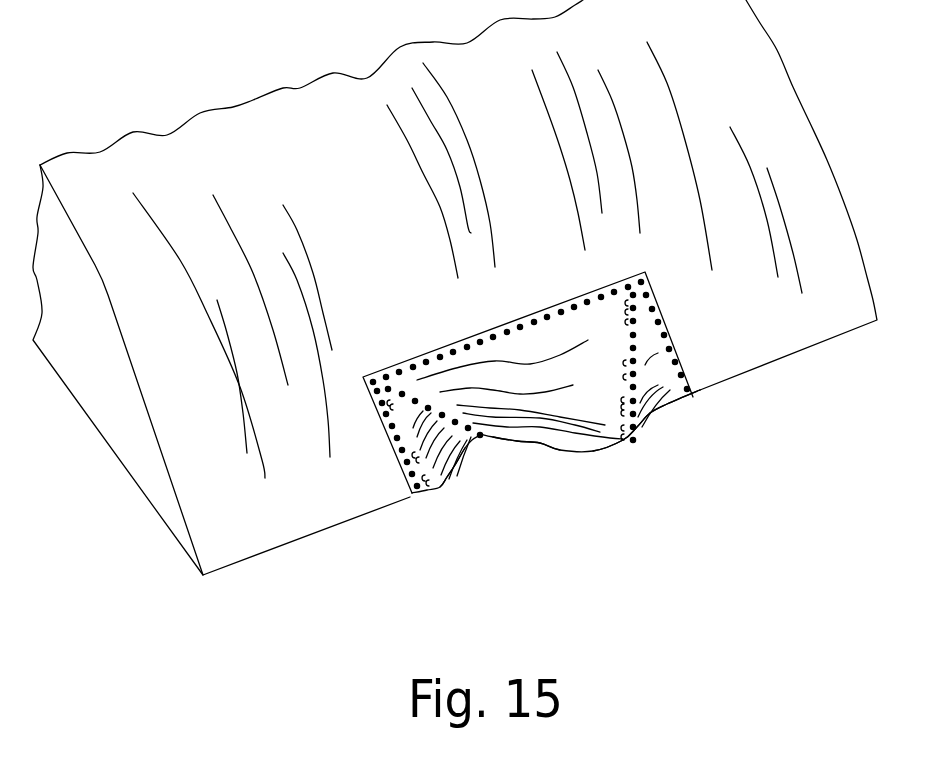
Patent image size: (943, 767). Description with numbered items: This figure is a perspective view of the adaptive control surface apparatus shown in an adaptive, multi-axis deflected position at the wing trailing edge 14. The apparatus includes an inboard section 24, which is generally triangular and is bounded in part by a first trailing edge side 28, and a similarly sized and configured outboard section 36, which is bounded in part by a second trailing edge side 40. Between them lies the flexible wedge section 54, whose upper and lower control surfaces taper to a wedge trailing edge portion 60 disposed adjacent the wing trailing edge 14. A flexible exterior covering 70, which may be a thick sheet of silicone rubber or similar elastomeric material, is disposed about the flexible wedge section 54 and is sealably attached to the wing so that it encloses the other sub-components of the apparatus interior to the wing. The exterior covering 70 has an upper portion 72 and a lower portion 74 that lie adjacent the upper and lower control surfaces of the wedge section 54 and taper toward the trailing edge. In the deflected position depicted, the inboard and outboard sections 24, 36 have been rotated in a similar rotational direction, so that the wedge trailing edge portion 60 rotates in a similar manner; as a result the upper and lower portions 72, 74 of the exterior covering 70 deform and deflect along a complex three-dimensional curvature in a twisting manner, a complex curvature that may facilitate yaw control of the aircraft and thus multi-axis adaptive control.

The wing trailing edge 14 is at (250, 122).
The flexible exterior covering 70 is at (560, 320).
The upper portion of exterior covering 72 is at (666, 350).
The flexible wedge section 54 is at (581, 403).
The outboard section 36 is at (437, 457).
The second trailing edge side 40 is at (463, 477).
The wedge trailing edge portion 60 is at (527, 455).
The first trailing edge side 28 is at (649, 447).
The inboard section 24 is at (651, 388).
The lower portion of exterior covering 74 is at (687, 408).